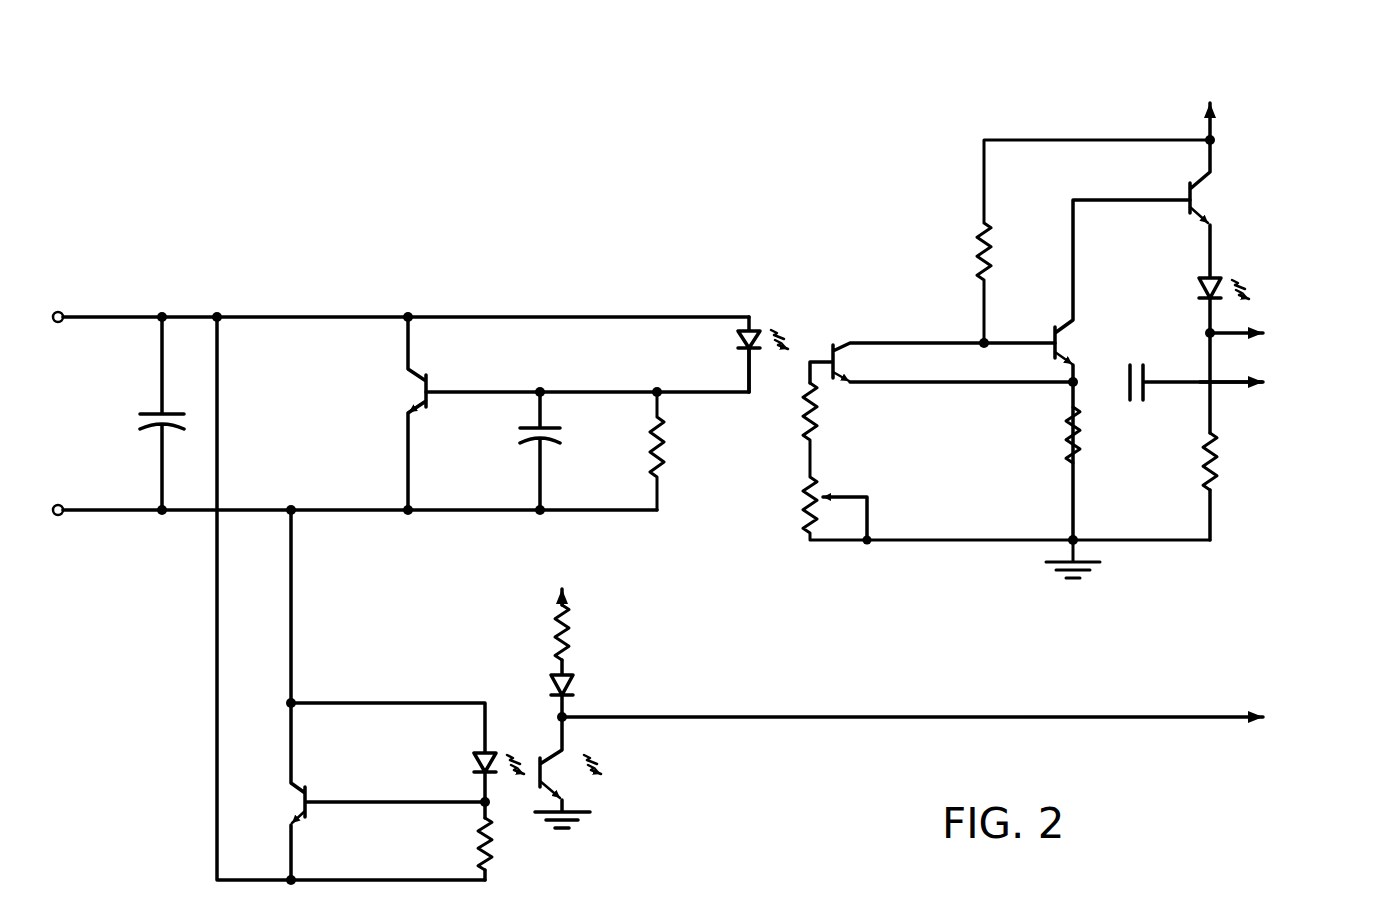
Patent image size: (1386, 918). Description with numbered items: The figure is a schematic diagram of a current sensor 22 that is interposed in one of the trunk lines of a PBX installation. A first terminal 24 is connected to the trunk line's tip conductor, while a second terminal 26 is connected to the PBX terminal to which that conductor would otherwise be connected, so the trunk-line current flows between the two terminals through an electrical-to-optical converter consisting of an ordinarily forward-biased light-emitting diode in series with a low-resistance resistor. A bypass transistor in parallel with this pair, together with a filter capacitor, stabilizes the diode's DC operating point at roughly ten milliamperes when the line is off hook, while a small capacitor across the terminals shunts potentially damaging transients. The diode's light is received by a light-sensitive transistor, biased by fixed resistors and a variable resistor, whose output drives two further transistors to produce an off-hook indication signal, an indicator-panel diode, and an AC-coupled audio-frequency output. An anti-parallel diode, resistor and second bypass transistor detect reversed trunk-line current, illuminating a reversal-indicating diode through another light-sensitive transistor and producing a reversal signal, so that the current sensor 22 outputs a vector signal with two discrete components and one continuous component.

The current sensor 22 is at (547, 132).
The terminal 24 is at (62, 311).
The terminal 26 is at (62, 504).